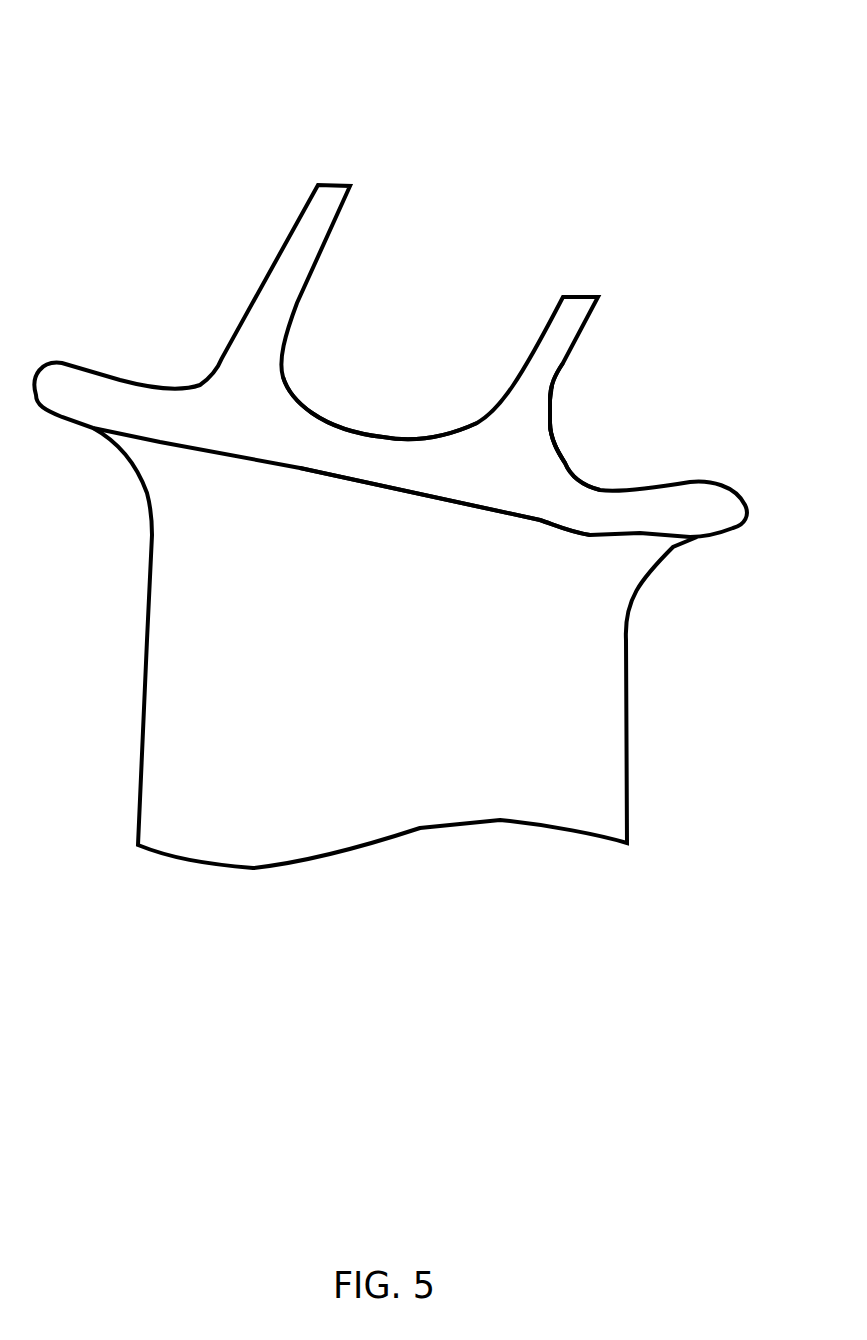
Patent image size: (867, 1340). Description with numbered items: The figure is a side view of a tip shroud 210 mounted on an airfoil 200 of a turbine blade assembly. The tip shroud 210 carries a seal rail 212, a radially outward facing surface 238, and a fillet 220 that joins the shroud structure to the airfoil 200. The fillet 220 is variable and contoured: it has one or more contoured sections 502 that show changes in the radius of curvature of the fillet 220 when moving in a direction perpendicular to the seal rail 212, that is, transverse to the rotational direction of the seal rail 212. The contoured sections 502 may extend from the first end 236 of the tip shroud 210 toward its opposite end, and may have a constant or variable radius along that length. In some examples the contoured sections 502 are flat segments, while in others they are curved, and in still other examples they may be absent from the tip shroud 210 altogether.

The airfoil 200 is at (590, 735).
The tip shroud 210 is at (360, 167).
The seal rail 212 is at (575, 292).
The fillet 220 is at (579, 372).
The first end 236 is at (505, 478).
The radially outward facing surface 238 is at (387, 430).
The contoured sections 502 is at (557, 427).